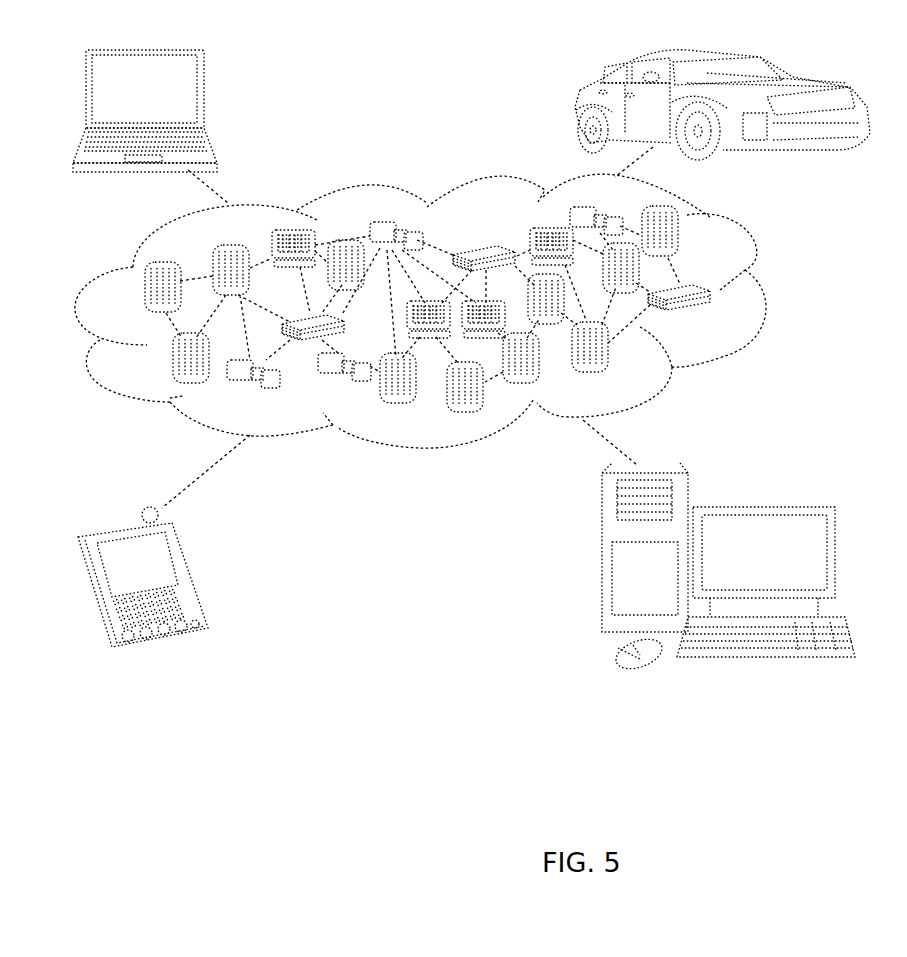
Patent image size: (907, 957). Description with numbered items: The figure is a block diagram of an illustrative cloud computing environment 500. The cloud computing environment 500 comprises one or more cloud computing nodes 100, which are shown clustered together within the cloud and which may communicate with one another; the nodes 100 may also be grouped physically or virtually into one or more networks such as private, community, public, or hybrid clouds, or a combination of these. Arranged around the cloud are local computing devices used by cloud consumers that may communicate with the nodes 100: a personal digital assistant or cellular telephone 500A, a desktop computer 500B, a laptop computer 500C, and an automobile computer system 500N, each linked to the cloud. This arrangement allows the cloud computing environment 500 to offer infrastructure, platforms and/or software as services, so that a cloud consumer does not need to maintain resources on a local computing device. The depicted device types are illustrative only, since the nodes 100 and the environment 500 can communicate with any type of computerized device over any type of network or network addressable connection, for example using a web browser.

The cloud computing environment 500 is at (765, 293).
The cloud computing nodes 100 is at (716, 318).
The personal digital assistant (PDA) or cellular telephone 500A is at (195, 572).
The desktop computer 500B is at (762, 503).
The laptop computer 500C is at (208, 93).
The automobile computer system 500N is at (575, 108).